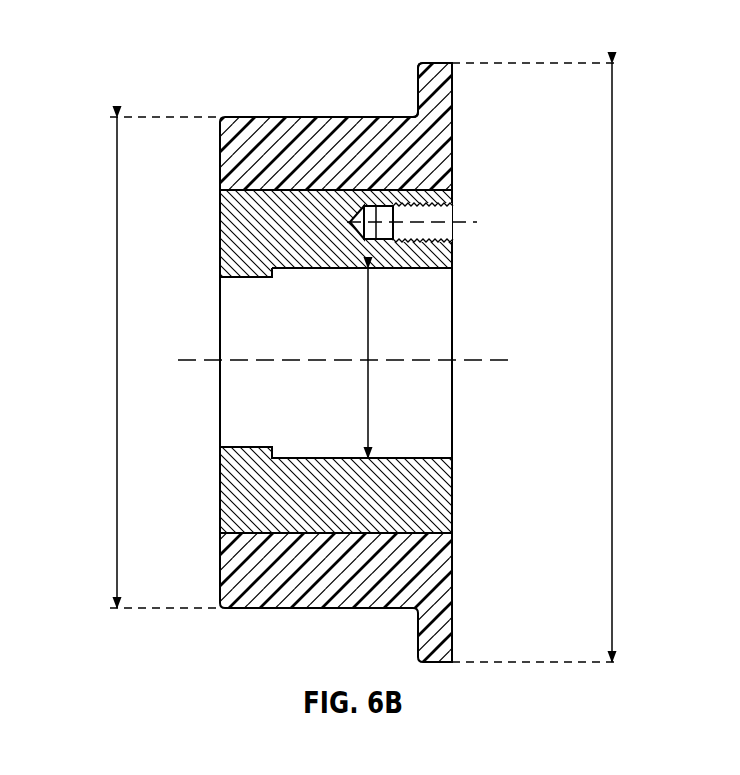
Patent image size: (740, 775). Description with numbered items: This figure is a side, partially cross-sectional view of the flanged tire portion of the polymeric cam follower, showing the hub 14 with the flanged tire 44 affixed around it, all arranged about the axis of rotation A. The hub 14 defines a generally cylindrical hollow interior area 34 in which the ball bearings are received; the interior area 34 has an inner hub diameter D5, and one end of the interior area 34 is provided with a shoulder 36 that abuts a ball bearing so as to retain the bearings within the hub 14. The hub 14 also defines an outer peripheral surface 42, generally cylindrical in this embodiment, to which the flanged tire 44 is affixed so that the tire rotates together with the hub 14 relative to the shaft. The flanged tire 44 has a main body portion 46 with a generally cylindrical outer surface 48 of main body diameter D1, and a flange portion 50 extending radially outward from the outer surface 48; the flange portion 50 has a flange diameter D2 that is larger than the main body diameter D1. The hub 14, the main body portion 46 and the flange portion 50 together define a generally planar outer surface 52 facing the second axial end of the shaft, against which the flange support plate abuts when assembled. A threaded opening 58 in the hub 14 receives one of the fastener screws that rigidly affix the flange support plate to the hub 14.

The hub 14 is at (228, 245).
The interior area 34 is at (392, 457).
The shoulder 36 is at (272, 272).
The outer peripheral surface 42 is at (312, 534).
The flanged tire 44 is at (403, 128).
The main body portion 46 is at (270, 128).
The generally cylindrical outer surface 48 is at (315, 115).
The flange portion 50 is at (435, 77).
The generally planar outer surface 52 is at (443, 566).
The threaded opening 58 is at (455, 216).
The main body diameter D1 is at (117, 362).
The flange diameter D2 is at (616, 360).
The inner hub diameter D5 is at (370, 310).
The axis of rotation A is at (181, 360).